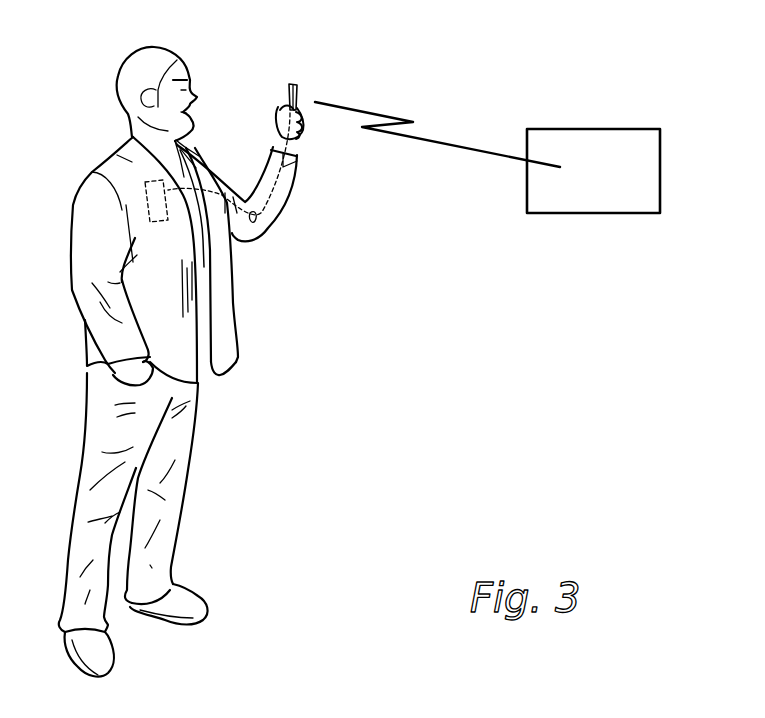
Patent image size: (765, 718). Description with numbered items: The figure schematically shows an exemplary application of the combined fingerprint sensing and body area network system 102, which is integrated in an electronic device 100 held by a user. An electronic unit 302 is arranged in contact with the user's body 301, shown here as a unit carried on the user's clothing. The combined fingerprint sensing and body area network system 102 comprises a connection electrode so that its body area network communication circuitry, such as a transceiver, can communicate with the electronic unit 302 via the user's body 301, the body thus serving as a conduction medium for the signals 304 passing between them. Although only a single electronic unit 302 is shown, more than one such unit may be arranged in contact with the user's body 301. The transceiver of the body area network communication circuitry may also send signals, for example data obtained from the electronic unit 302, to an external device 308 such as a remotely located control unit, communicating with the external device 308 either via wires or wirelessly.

The electronic device 100 is at (322, 71).
The combined fingerprint sensing and body area network system 102 is at (290, 92).
The user's body 301 is at (107, 163).
The electronic unit 302 is at (157, 203).
The signals 304 is at (290, 193).
The external device 308 is at (603, 138).